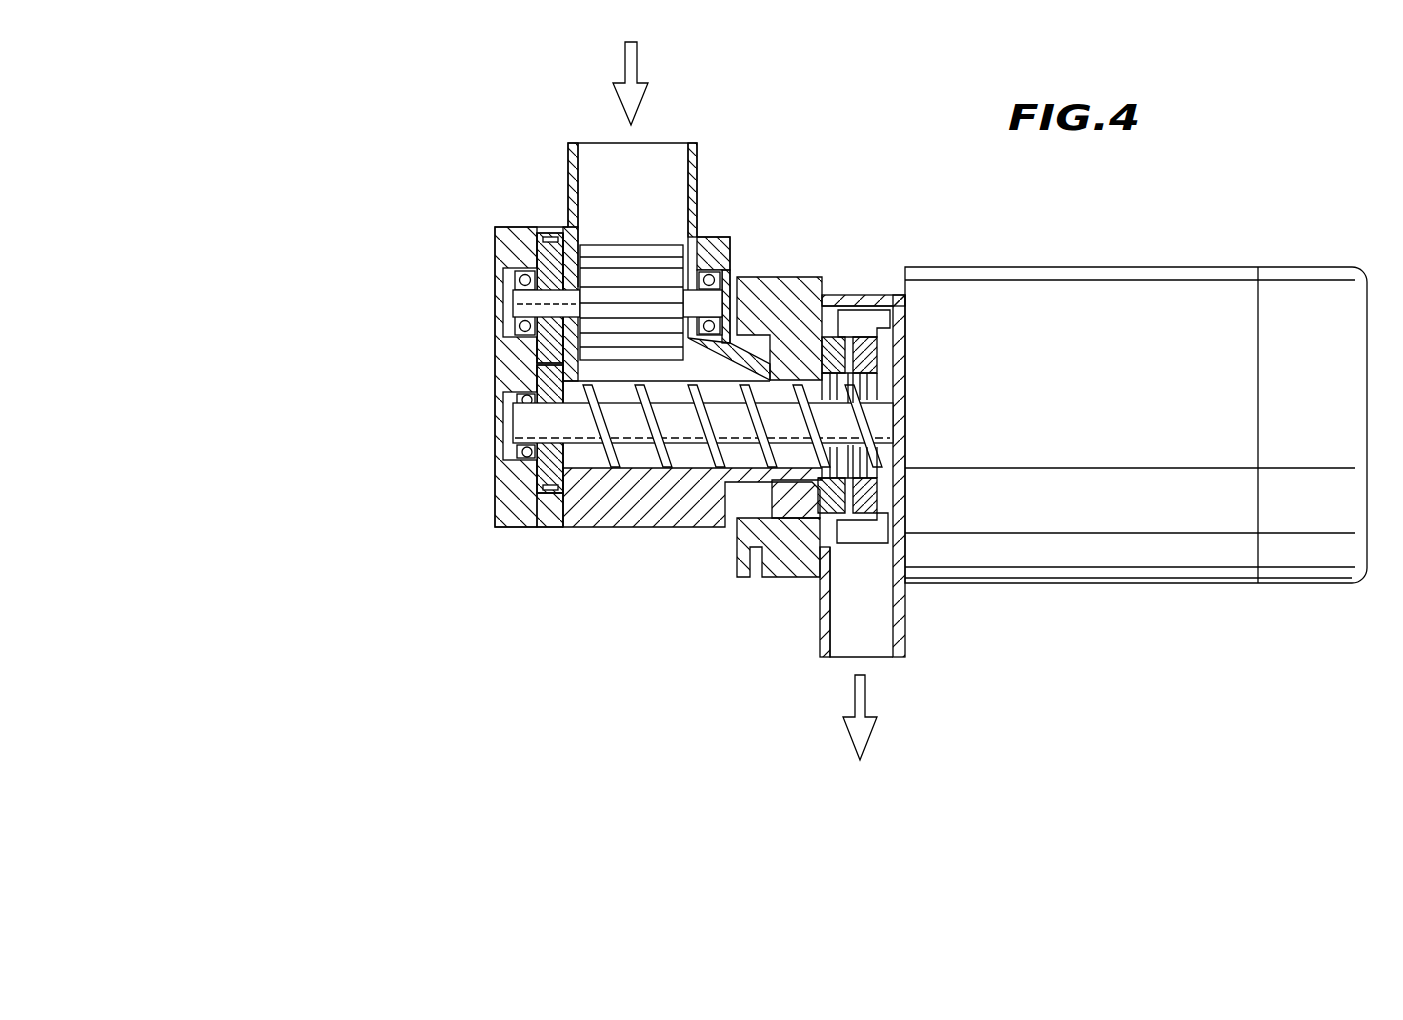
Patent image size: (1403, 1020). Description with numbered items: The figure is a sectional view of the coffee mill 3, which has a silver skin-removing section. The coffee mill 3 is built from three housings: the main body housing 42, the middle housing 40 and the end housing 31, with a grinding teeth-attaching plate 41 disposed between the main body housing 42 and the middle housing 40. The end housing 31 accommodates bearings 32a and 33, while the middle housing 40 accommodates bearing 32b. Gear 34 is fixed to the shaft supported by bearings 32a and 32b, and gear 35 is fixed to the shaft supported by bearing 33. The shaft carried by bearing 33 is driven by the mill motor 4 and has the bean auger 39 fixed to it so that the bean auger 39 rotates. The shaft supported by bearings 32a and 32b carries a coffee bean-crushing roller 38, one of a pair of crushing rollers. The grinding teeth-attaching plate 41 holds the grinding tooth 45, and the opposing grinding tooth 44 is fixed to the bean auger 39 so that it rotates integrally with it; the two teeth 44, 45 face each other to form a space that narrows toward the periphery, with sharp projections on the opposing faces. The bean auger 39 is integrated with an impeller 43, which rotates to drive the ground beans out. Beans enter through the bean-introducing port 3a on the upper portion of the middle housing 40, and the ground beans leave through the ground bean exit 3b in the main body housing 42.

The coffee mill 3 is at (557, 552).
The bean-introducing port 3a is at (590, 155).
The ground bean exit 3b is at (873, 633).
The mill motor 4 is at (1143, 570).
The end housing 31 is at (508, 368).
The bearing 32a is at (517, 278).
The bearing 32b is at (710, 277).
The bearing 33 is at (523, 398).
The gear 34 is at (552, 257).
The gear 35 is at (543, 467).
The coffee bean-crushing roller 38 is at (622, 265).
The bean auger 39 is at (683, 437).
The middle housing 40 is at (712, 512).
The grinding teeth-attaching plate 41 is at (748, 290).
The main body housing 42 is at (863, 300).
The impeller 43 is at (857, 323).
The grinding tooth 44 is at (873, 503).
The grinding tooth 45 is at (815, 480).